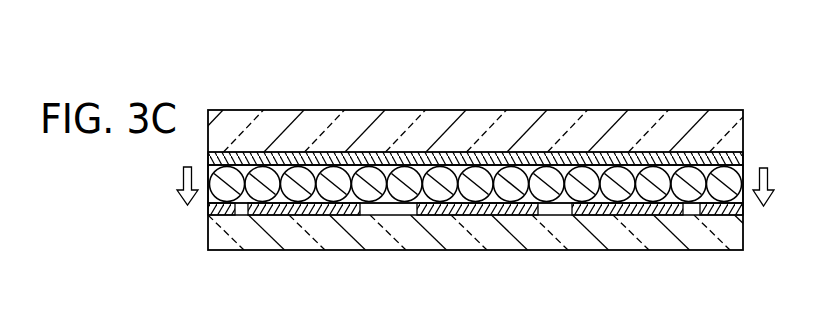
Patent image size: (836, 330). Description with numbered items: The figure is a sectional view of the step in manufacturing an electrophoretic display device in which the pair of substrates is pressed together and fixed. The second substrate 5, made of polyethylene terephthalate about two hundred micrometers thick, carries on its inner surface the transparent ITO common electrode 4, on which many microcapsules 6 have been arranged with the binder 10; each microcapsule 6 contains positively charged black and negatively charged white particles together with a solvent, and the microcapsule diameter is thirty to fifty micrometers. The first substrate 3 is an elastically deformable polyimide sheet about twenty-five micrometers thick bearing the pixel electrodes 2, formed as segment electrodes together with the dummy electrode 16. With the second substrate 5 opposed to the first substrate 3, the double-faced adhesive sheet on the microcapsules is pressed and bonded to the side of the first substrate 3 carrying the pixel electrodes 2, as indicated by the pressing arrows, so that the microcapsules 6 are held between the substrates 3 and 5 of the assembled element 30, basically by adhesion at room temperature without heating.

The display device 30 is at (539, 86).
The second substrate 5 is at (743, 134).
The common electrode 4 is at (746, 160).
The binder 10 is at (415, 190).
The microcapsules 6 is at (543, 195).
The pixel electrodes 2 is at (636, 211).
The first substrate 3 is at (745, 245).
The dummy electrode 16 is at (213, 208).